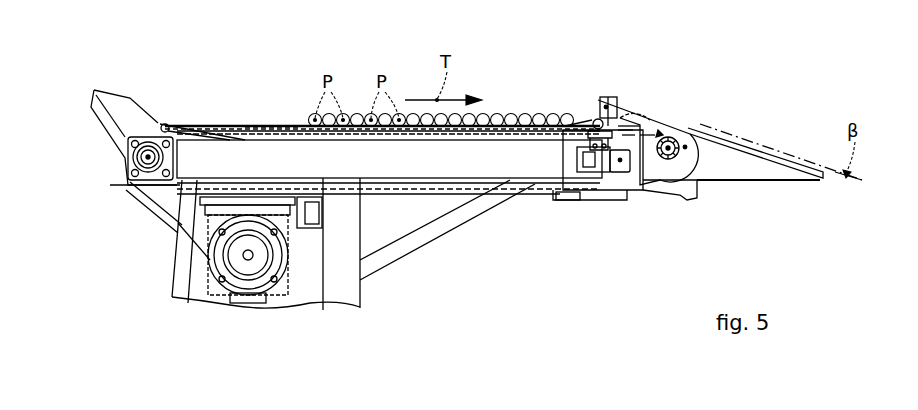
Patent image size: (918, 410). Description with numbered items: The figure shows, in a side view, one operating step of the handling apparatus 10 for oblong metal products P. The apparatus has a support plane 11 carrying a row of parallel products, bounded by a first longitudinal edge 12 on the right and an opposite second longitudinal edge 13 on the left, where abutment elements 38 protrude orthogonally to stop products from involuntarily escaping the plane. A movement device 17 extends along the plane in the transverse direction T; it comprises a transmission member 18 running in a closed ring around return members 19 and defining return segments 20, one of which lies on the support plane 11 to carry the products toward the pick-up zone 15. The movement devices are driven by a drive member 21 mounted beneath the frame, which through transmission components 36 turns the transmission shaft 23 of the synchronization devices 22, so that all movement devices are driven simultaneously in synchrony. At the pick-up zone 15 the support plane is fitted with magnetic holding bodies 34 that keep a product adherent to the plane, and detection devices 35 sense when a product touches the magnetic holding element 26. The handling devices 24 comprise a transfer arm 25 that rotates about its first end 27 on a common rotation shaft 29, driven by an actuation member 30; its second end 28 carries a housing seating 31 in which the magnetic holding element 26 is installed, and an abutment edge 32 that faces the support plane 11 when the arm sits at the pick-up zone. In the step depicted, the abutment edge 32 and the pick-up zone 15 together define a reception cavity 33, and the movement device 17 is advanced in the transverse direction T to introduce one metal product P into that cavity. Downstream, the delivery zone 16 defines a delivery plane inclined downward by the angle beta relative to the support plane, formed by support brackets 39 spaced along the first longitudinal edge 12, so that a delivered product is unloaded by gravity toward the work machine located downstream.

The handling apparatus 10 is at (272, 36).
The support plane 11 is at (199, 114).
The first longitudinal edge 12 is at (592, 122).
The second longitudinal edge 13 is at (162, 124).
The pick-up zone 15 is at (600, 173).
The delivery zone 16 is at (762, 134).
The movement device 17 is at (160, 104).
The transmission member 18 is at (245, 122).
The return member 19 is at (620, 162).
The return segment 20 is at (281, 127).
The drive member 21 is at (238, 261).
The synchronization devices 22 is at (120, 147).
The transmission shaft 23 is at (140, 158).
The handling devices 24 is at (681, 113).
The transfer arm 25 is at (649, 116).
The magnetic holding element 26 is at (610, 96).
The first end 27 is at (686, 147).
The second end 28 is at (606, 105).
The rotation shaft 29 is at (664, 168).
The actuation member 30 is at (573, 199).
The housing seating 31 is at (648, 118).
The abutment edge 32 is at (598, 126).
The reception cavity 33 is at (570, 118).
The magnetic holding body 34 is at (582, 127).
The detection devices 35 is at (623, 133).
The transmission components 36 is at (154, 200).
The abutment element 38 is at (105, 100).
The support bracket 39 is at (750, 170).